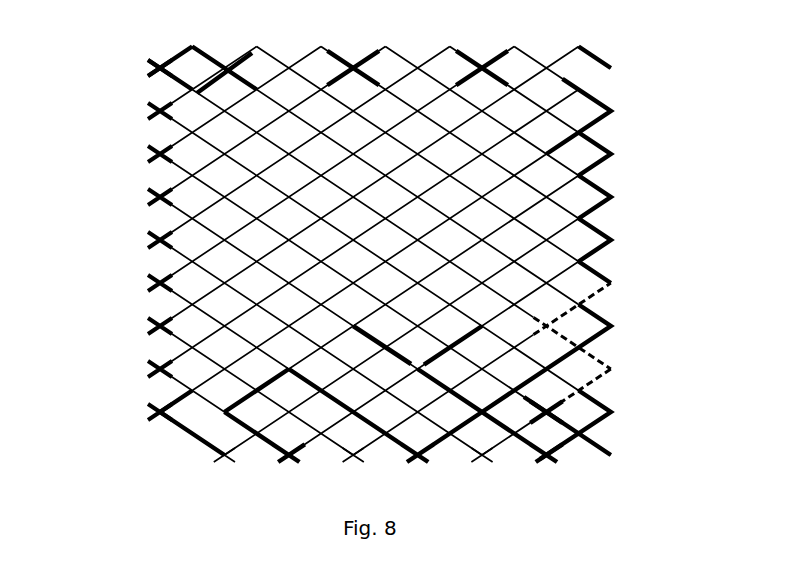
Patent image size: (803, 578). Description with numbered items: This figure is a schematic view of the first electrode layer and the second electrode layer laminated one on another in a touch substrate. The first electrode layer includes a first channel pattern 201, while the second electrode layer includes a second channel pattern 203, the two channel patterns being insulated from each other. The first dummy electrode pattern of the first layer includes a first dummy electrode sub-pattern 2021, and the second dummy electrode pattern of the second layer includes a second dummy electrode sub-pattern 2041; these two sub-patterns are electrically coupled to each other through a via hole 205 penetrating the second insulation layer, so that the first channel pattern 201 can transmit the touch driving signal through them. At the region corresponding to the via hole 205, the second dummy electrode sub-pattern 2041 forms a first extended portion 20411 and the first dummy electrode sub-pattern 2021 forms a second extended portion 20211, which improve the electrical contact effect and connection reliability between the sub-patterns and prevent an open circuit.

The first channel pattern 201 is at (200, 248).
The second channel pattern 203 is at (403, 55).
The first dummy electrode sub-pattern 2021 is at (572, 312).
The second extended portion 20211 is at (557, 372).
The via hole 205 is at (548, 412).
The second dummy electrode sub-pattern 2041 is at (611, 445).
The first extended portion 20411 is at (528, 436).